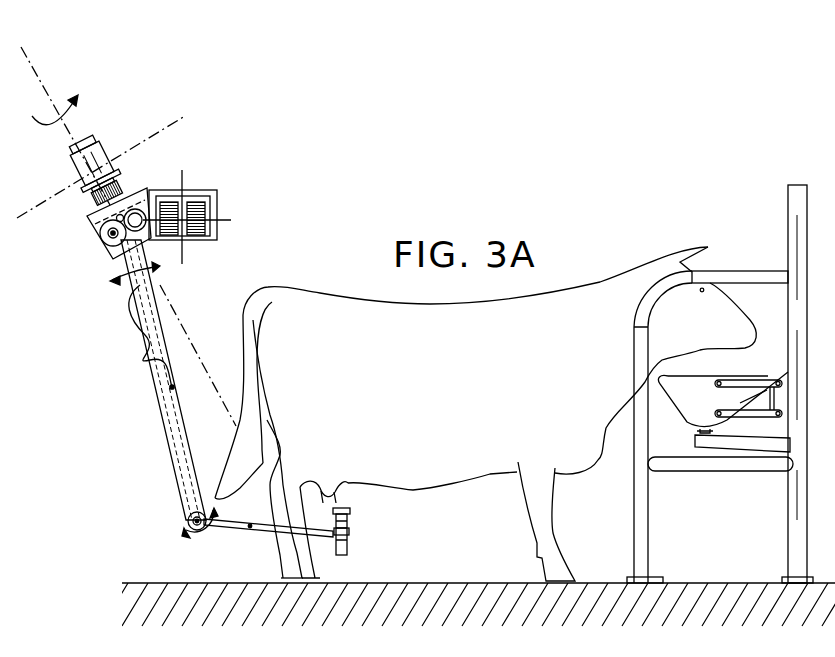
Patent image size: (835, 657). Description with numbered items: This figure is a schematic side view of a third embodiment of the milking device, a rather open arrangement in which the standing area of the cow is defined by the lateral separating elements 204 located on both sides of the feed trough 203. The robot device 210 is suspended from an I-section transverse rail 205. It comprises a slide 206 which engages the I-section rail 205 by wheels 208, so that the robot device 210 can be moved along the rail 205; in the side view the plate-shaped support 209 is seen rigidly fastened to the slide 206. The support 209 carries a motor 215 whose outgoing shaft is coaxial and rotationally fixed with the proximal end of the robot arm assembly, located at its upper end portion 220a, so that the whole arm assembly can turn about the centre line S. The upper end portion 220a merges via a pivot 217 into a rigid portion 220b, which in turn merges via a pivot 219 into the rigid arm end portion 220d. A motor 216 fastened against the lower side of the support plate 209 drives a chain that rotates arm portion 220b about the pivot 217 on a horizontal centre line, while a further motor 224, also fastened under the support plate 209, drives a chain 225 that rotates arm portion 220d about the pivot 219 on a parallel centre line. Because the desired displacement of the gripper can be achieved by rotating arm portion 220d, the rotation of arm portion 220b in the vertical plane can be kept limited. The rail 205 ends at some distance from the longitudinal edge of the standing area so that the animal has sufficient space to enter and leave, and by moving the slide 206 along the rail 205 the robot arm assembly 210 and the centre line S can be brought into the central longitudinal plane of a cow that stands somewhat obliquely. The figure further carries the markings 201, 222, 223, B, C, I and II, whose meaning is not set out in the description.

The milking system 201 is at (363, 171).
The feed trough 203 is at (724, 412).
The lateral separating elements 204 is at (750, 277).
The I-section transverse rail 205 is at (195, 224).
The slide 206 is at (193, 192).
The wheels 208 is at (193, 238).
The plate-shaped support 209 is at (115, 212).
The robot device 210 is at (219, 146).
The motor 215 is at (98, 160).
The motor 216 is at (138, 283).
The pivot 217 is at (112, 250).
The pivot 219 is at (200, 512).
The upper end portion 220a is at (113, 233).
The rigid portion 220b is at (182, 445).
The rigid arm end portion 220d is at (262, 531).
The teat cup 222 is at (340, 515).
The cup holder 223 is at (342, 533).
The motor 224 is at (152, 263).
The chain 225 is at (168, 300).
The centre line S is at (21, 47).
The angle B is at (73, 117).
The cable C is at (142, 356).
The position I is at (821, 390).
The position II is at (115, 412).